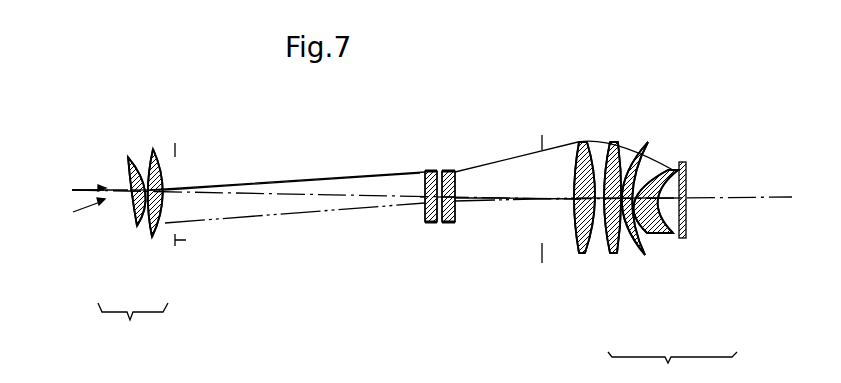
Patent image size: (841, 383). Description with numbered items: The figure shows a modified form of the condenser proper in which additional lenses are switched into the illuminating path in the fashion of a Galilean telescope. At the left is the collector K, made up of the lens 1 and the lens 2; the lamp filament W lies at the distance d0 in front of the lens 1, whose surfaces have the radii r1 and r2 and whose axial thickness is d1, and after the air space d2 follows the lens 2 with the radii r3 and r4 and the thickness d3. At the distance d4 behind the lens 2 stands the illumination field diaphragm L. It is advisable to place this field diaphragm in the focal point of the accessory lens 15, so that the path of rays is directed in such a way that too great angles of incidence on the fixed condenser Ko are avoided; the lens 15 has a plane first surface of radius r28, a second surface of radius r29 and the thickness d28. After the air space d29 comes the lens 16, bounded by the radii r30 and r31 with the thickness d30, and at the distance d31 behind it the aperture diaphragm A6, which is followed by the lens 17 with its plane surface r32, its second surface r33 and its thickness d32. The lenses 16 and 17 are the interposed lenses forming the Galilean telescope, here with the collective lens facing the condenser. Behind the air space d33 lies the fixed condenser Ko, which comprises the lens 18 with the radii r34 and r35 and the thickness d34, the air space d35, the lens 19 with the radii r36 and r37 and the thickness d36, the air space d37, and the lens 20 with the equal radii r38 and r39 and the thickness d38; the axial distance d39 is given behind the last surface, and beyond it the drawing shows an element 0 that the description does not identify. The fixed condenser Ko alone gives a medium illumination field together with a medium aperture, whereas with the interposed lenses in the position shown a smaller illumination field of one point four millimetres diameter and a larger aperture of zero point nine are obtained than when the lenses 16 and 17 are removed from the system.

The lens 1 is at (127, 234).
The lens 2 is at (155, 230).
The collector K is at (133, 324).
The radius r1 is at (128, 163).
The radius r2 is at (134, 160).
The radius r3 is at (152, 152).
The radius r4 is at (158, 157).
The axial distance d4 is at (167, 190).
The lamp filament W is at (78, 212).
The distance d0 is at (118, 196).
The axial thickness d1 is at (133, 203).
The axial distance d2 is at (147, 228).
The axial thickness d3 is at (165, 225).
The field diaphragm L is at (187, 241).
The accessory lens 15 is at (432, 223).
The lens 16 is at (452, 222).
The radius r28 is at (427, 172).
The radius r29 is at (435, 172).
The radius r30 is at (443, 172).
The radius r31 is at (455, 172).
The axial thickness d28 is at (423, 208).
The axial distance d29 is at (440, 222).
The axial thickness d30 is at (453, 213).
The axial distance d31 is at (483, 198).
The axial thickness d32 is at (577, 199).
The aperture diaphragm A6 is at (540, 250).
The lens 17 is at (580, 253).
The fixed condenser lens 18 is at (615, 253).
The fixed condenser lens 19 is at (652, 240).
The fixed condenser lens 20 is at (676, 236).
The plane-parallel plate 0 is at (687, 171).
The fixed condenser Ko is at (672, 367).
The radius r32 is at (578, 142).
The radius r33 is at (587, 142).
The radius r34 is at (611, 142).
The radius r35 is at (618, 143).
The radius r36 is at (645, 148).
The radius r37 is at (648, 147).
The radius r38 is at (674, 168).
The radius r39 is at (679, 171).
The axial distance d33 is at (600, 207).
The axial thickness d34 is at (617, 253).
The axial distance d35 is at (626, 215).
The axial thickness d36 is at (650, 255).
The axial distance d37 is at (662, 230).
The axial thickness d38 is at (673, 235).
The axial distance d39 is at (665, 202).